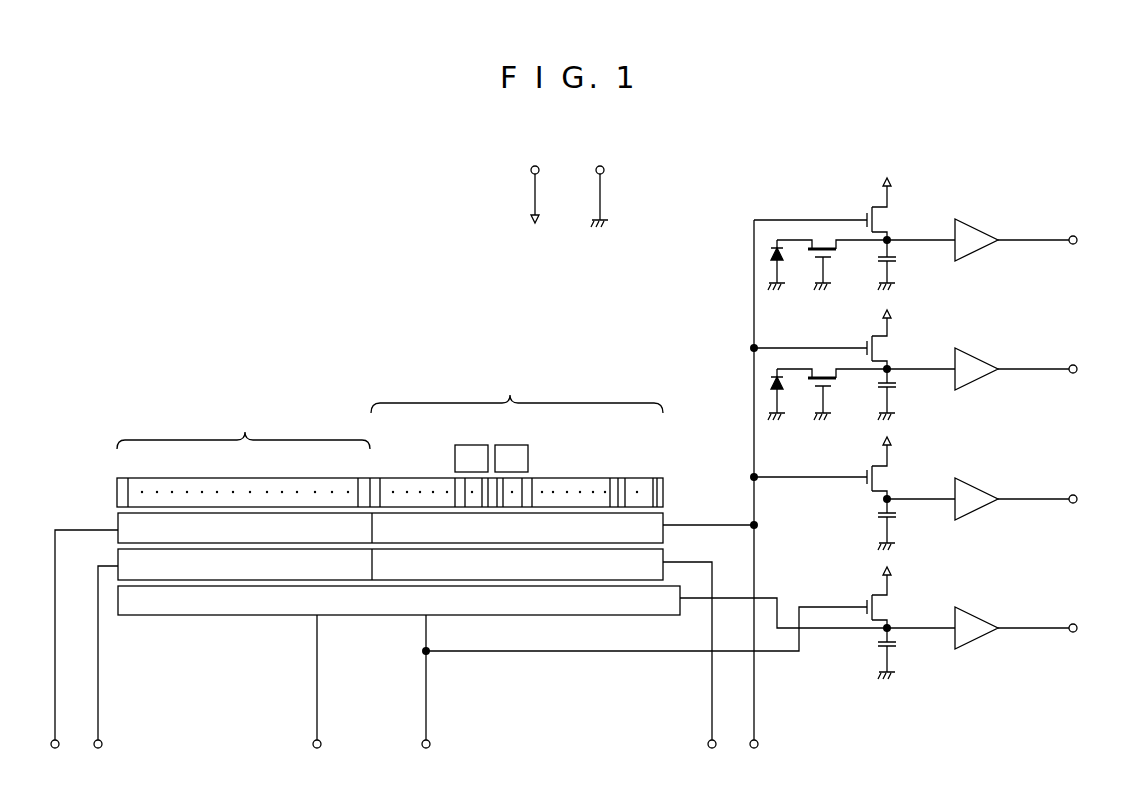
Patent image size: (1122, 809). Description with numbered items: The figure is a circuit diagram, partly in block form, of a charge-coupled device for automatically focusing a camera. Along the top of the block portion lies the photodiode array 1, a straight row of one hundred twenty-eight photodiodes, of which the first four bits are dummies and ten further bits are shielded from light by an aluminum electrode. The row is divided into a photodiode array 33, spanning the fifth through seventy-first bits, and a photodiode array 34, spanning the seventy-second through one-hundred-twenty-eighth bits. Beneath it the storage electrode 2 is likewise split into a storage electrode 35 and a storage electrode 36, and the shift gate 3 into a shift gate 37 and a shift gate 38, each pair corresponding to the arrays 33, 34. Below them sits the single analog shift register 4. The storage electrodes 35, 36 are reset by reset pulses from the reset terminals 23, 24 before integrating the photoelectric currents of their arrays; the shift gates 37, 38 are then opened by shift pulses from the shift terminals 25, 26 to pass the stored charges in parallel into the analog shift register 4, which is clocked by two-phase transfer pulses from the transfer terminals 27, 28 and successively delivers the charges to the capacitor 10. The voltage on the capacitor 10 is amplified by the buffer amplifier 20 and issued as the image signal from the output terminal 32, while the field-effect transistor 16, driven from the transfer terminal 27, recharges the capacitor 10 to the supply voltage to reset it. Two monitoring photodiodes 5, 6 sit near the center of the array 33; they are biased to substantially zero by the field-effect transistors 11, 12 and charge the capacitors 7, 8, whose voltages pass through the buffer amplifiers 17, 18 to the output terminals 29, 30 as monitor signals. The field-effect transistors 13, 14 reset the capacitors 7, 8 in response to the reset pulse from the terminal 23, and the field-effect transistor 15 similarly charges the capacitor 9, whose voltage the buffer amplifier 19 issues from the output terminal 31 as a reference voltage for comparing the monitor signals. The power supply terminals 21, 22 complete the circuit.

The photodiode array 1 is at (112, 483).
The storage electrode 2 is at (112, 515).
The shift gate 3 is at (112, 560).
The analog shift register 4 is at (166, 624).
The monitoring photodiode 5 is at (515, 446).
The monitoring photodiode 6 is at (471, 446).
The capacitor 7 is at (898, 258).
The capacitor 8 is at (898, 386).
The capacitor 9 is at (898, 516).
The capacitor 10 is at (898, 645).
The field-effect transistor 11 is at (833, 258).
The field-effect transistor 12 is at (833, 386).
The field-effect transistor 13 is at (880, 222).
The field-effect transistor 14 is at (880, 350).
The field-effect transistor 15 is at (880, 480).
The field-effect transistor 16 is at (880, 609).
The buffer amplifier 17 is at (978, 226).
The buffer amplifier 18 is at (978, 355).
The buffer amplifier 19 is at (983, 484).
The buffer amplifier 20 is at (983, 613).
The power supply terminal 21 is at (603, 168).
The power supply terminal 22 is at (538, 168).
The reset terminal 23 is at (757, 742).
The reset terminal 24 is at (58, 742).
The shift terminal 25 is at (715, 742).
The shift terminal 26 is at (101, 742).
The transfer terminal 27 is at (429, 742).
The transfer terminal 28 is at (320, 742).
The output terminal 29 is at (1071, 244).
The output terminal 30 is at (1071, 373).
The output terminal 31 is at (1071, 503).
The output terminal 32 is at (1071, 632).
The photodiode array 33 is at (517, 392).
The photodiode array 34 is at (243, 428).
The storage electrode 35 is at (665, 514).
The storage electrode 36 is at (118, 534).
The shift gate 37 is at (665, 552).
The shift gate 38 is at (125, 578).